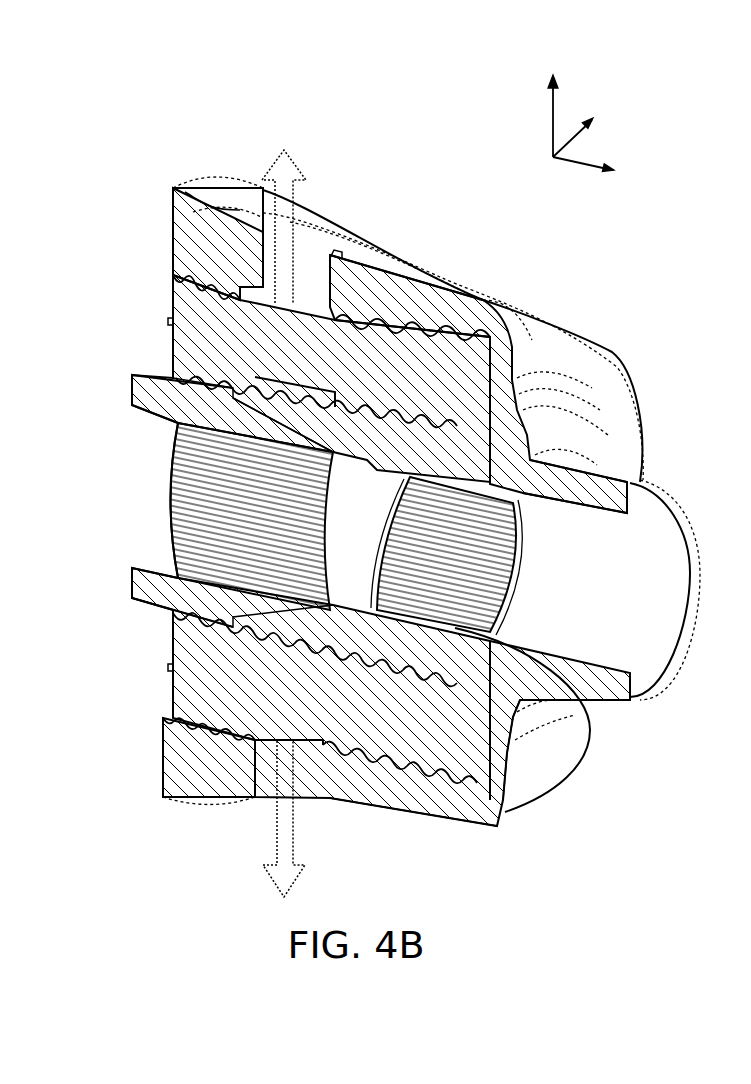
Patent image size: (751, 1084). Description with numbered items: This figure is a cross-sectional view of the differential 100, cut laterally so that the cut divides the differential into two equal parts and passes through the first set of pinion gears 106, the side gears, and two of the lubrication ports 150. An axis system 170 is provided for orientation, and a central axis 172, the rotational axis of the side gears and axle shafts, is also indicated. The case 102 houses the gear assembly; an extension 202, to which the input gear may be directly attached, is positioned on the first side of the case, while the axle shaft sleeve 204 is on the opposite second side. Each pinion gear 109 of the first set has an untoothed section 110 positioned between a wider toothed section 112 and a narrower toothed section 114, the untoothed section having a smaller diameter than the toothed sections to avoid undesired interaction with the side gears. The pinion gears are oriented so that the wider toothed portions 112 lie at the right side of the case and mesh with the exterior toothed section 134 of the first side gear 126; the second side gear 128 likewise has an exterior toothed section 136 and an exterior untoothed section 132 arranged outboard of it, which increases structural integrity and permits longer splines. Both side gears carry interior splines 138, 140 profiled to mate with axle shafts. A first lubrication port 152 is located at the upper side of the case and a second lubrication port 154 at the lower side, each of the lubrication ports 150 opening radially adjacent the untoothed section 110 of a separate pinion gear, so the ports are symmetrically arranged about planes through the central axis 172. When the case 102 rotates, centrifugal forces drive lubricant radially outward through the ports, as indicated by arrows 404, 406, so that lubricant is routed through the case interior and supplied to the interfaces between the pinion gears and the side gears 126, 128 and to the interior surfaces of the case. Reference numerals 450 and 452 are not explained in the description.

The differential 100 is at (652, 210).
The case 102 is at (480, 307).
The first set of pinion gears 106 is at (102, 303).
The pinion gear 109 is at (173, 358).
The untoothed section 110 is at (303, 312).
The wider toothed section 112 is at (388, 327).
The narrower toothed section 114 is at (175, 268).
The first side gear 126 is at (528, 548).
The second side gear 128 is at (172, 503).
The exterior untoothed section 132 is at (165, 378).
The exterior toothed section 134 is at (450, 404).
The exterior toothed section 136 is at (205, 425).
The interior splines 138 is at (485, 602).
The interior splines 140 is at (210, 555).
The lubrication ports 150 is at (385, 165).
The first lubrication port 152 is at (328, 246).
The second lubrication port 154 is at (305, 797).
The axis system 170 is at (630, 88).
The central axis 172 is at (706, 607).
The extension 202 is at (183, 803).
The axle shaft sleeve 204 is at (628, 485).
The arrow 404 is at (297, 193).
The arrow 406 is at (277, 833).
The axial insertion force 450 is at (520, 600).
The lateral force 452 is at (168, 322).